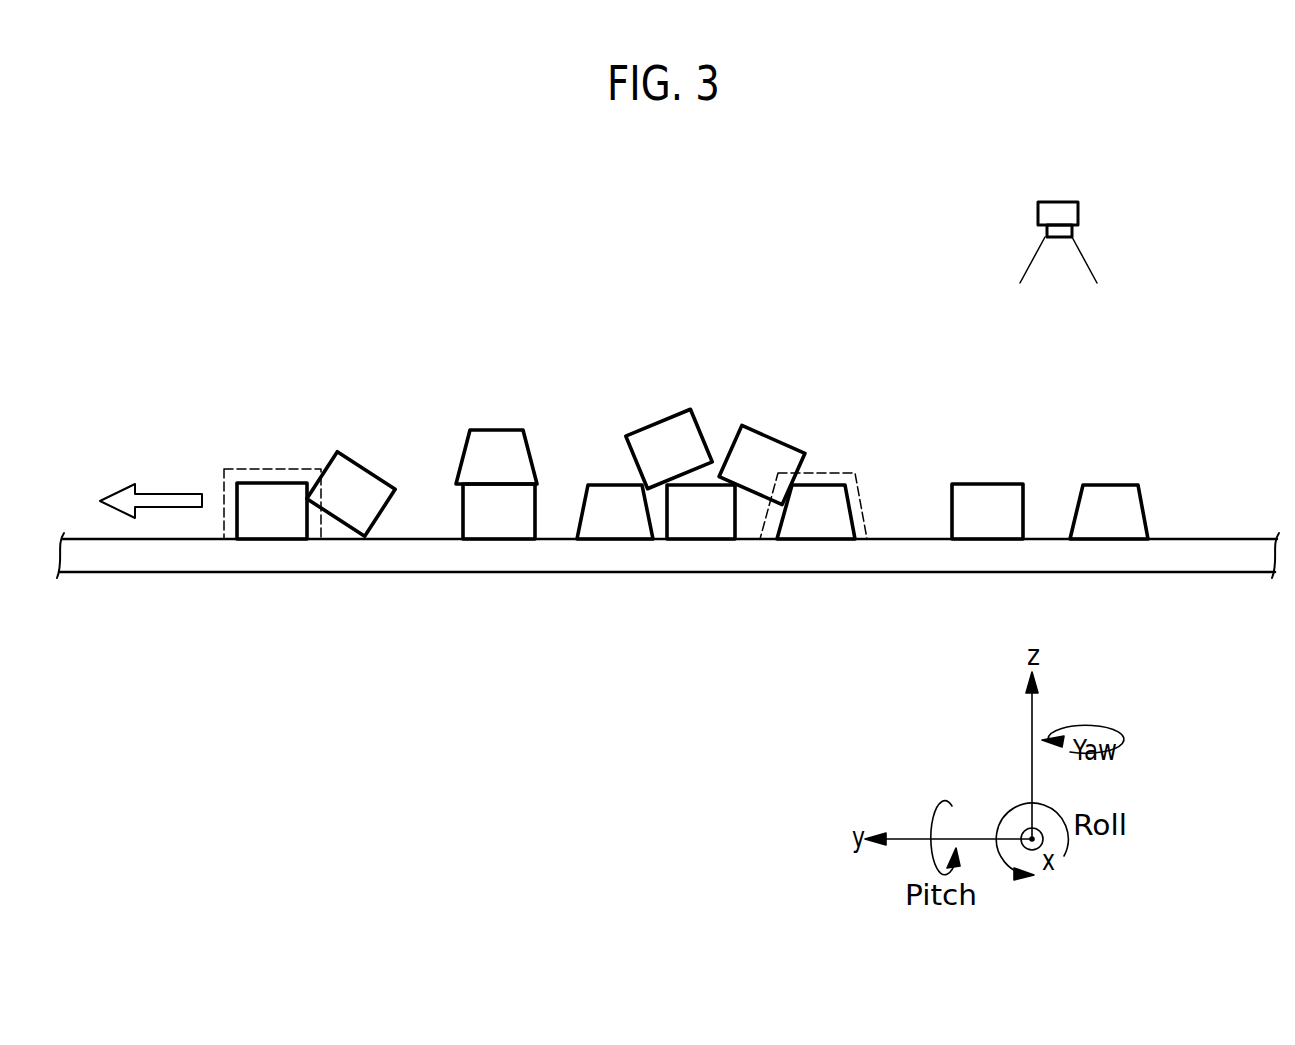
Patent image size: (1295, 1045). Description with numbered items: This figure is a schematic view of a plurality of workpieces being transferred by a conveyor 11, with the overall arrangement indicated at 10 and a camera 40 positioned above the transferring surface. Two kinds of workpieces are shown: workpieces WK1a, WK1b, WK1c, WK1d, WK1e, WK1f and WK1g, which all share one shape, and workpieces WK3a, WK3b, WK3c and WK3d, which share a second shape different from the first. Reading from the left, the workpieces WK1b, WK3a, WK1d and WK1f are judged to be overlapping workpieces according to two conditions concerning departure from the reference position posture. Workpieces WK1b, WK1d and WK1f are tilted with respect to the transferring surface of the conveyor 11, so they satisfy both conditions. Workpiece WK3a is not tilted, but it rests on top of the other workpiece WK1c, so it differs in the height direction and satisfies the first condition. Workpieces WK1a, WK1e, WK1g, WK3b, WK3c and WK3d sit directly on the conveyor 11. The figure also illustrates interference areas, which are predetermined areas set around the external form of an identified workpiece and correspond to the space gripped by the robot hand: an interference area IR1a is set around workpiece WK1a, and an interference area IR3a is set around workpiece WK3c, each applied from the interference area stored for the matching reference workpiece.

The image inspection system 10 is at (1112, 162).
The conveyor 11 is at (1227, 538).
The camera 40 is at (1079, 212).
The interference area IR1a is at (233, 468).
The interference area IR3a is at (825, 472).
The workpiece WK1a is at (277, 482).
The workpiece WK1b is at (362, 470).
The workpiece WK1c is at (462, 520).
The workpiece WK1d is at (663, 418).
The workpiece WK1e is at (717, 480).
The workpiece WK1f is at (770, 426).
The workpiece WK1g is at (987, 483).
The workpiece WK3a is at (493, 428).
The workpiece WK3b is at (603, 485).
The workpiece WK3c is at (848, 510).
The workpiece WK3d is at (1110, 485).